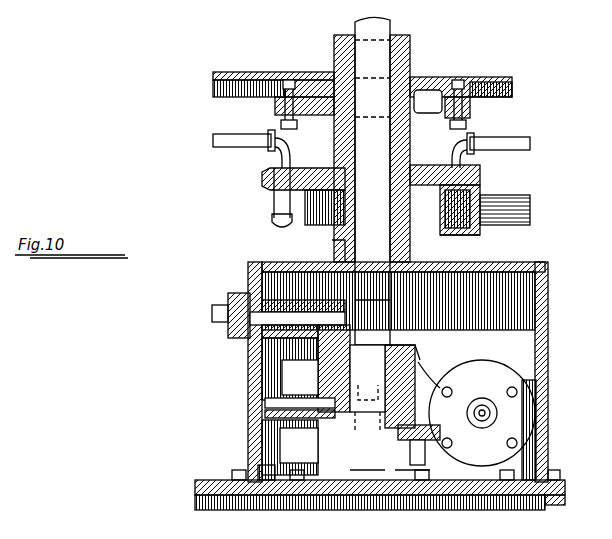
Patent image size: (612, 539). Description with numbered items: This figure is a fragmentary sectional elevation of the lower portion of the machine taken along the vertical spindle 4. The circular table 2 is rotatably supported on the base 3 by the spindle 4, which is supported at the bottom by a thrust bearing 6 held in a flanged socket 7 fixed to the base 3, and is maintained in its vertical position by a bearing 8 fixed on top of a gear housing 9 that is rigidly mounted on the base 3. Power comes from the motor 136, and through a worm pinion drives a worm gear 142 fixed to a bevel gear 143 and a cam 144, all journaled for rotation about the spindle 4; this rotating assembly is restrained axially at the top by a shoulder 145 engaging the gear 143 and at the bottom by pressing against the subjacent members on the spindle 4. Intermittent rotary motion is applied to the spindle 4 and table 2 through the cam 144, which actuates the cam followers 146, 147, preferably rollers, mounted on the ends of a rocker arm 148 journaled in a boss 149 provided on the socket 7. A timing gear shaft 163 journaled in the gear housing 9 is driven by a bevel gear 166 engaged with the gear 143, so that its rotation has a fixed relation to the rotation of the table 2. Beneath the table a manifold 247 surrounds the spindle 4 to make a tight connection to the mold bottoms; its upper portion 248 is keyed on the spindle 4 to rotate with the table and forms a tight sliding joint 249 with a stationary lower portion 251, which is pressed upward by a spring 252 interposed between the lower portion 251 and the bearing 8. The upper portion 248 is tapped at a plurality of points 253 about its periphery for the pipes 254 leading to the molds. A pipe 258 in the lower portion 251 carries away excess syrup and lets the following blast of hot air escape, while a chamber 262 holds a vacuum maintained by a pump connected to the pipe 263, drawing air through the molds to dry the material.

The circular table 2 is at (498, 77).
The base 3 is at (560, 499).
The spindle 4 is at (388, 24).
The thrust bearing 6 is at (358, 480).
The flanged socket 7 is at (402, 488).
The bearing 8 is at (334, 246).
The gear housing 9 is at (268, 264).
The motor 136 is at (518, 410).
The worm gear 142 is at (452, 376).
The bevel gear 143 is at (418, 352).
The cam 144 is at (440, 420).
The shoulder 145 is at (358, 344).
The cam follower 146 is at (367, 387).
The cam follower 147 is at (265, 405).
The rocker arm 148 is at (265, 417).
The boss 149 is at (265, 388).
The timing gear shaft 163 is at (212, 310).
The bevel gear 166 is at (342, 298).
The manifold 247 is at (262, 183).
The upper portion of manifold 248 is at (480, 175).
The sliding joint 249 is at (262, 174).
The lower portion of manifold 251 is at (462, 232).
The spring 252 is at (338, 212).
The tapped points 253 is at (287, 165).
The pipes 254 is at (215, 140).
The pipe 258 is at (272, 214).
The chamber 262 is at (490, 195).
The pipe 263 is at (530, 211).